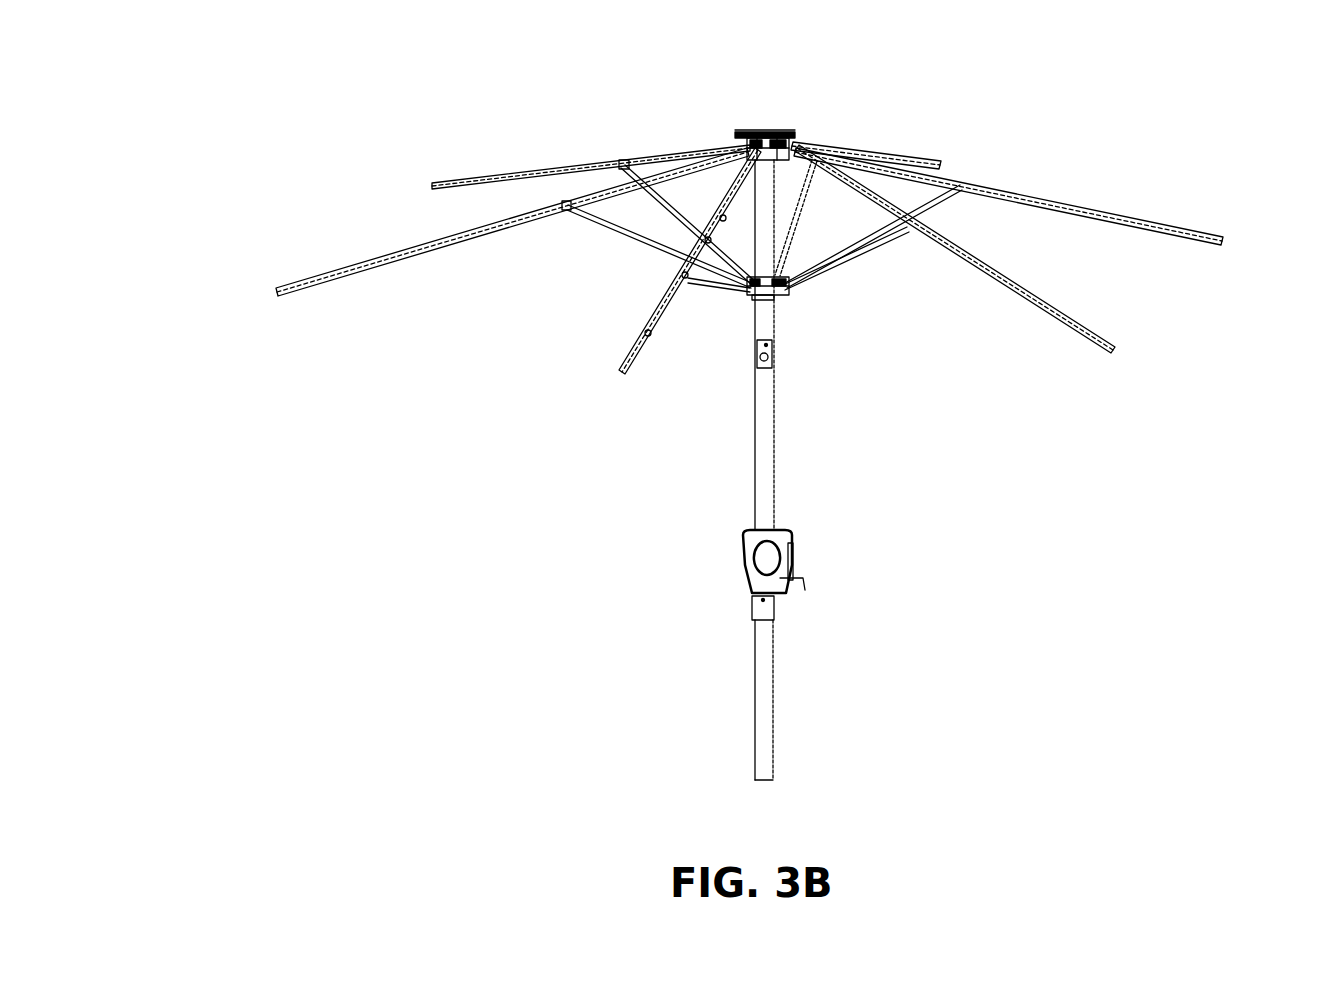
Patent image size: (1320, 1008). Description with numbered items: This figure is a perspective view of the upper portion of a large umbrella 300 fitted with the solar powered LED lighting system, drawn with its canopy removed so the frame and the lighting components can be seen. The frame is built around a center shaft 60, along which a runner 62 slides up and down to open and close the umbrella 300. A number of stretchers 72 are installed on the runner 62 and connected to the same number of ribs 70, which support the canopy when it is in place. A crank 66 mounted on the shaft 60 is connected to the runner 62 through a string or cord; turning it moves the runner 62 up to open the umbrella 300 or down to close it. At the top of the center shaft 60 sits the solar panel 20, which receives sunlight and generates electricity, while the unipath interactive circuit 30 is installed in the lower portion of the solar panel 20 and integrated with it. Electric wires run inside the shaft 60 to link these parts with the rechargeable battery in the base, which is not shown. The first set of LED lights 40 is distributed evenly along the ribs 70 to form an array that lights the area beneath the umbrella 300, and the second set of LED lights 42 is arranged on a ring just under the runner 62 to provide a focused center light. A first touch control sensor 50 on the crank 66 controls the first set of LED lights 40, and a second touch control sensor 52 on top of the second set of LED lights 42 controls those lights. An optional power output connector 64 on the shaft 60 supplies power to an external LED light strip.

The large umbrella 300 is at (212, 108).
The solar panel 20 is at (772, 132).
The unipath interactive circuit 30 is at (740, 140).
The first set of LED lights 40 is at (665, 162).
The second set of LED lights 42 is at (755, 295).
The first touch control sensor 50 is at (795, 456).
The second touch control sensor 52 is at (745, 290).
The center shaft 60 is at (768, 685).
The runner 62 is at (790, 288).
The power output connector 64 is at (772, 352).
The crank 66 is at (790, 580).
The ribs 70 is at (1087, 345).
The stretchers 72 is at (618, 230).